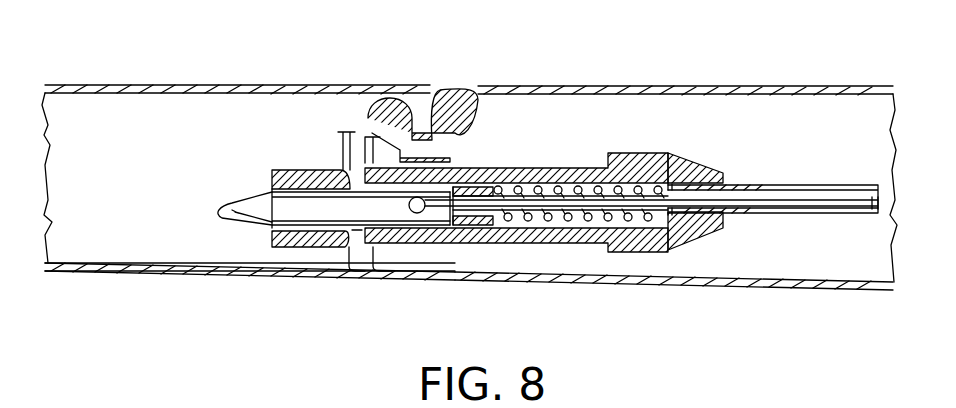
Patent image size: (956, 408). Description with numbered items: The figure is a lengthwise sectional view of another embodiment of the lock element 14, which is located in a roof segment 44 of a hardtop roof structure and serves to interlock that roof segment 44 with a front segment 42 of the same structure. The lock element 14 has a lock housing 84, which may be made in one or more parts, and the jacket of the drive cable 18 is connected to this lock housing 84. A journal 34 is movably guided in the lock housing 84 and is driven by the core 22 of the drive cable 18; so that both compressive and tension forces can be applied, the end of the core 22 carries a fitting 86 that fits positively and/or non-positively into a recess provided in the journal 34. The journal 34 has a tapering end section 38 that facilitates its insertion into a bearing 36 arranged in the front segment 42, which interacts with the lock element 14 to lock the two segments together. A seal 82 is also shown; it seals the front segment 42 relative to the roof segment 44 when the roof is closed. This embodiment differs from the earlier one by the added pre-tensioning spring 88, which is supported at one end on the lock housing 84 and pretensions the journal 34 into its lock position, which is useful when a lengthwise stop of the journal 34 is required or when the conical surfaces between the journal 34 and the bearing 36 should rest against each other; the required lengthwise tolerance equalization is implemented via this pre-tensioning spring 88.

The lock element 14 is at (545, 150).
The drive cable 18 is at (763, 213).
The core 22 is at (832, 202).
The journal 34 is at (373, 208).
The bearing 36 is at (300, 247).
The tapering end section 38 is at (234, 213).
The front segment 42 is at (172, 124).
The roof segment 44 is at (795, 122).
The seal 82 is at (468, 90).
The lock housing 84 is at (642, 245).
The fitting 86 is at (422, 212).
The pre-tensioning spring 88 is at (540, 223).